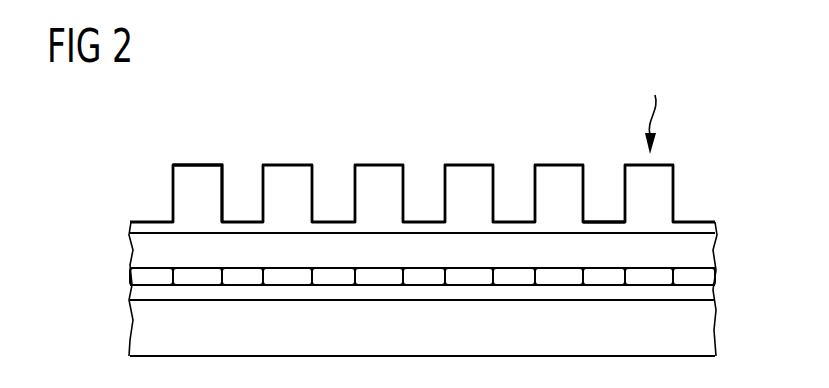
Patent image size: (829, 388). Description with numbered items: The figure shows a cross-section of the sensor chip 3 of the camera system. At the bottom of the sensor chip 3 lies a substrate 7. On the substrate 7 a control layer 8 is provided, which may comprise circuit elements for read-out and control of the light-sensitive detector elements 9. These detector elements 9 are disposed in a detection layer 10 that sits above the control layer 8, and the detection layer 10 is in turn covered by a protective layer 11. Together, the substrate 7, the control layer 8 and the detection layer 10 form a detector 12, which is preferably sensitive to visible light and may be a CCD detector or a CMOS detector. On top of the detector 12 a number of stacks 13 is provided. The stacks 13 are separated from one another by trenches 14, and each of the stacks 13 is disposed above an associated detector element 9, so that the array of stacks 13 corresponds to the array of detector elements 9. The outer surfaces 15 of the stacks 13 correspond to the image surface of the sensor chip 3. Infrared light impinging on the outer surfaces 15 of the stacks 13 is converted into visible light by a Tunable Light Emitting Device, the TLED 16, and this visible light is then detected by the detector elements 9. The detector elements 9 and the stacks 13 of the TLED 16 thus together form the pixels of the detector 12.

The sensor chip 3 is at (698, 79).
The substrate 7 is at (708, 323).
The control layer 8 is at (705, 292).
The detector elements 9 is at (650, 278).
The detection layer 10 is at (451, 302).
The protective layer 11 is at (708, 240).
The detector 12 is at (108, 306).
The stacks 13 is at (655, 109).
The trenches 14 is at (602, 183).
The outer surfaces 15 is at (205, 158).
The Tunable Light Emitting Device (TLED) 16 is at (184, 200).